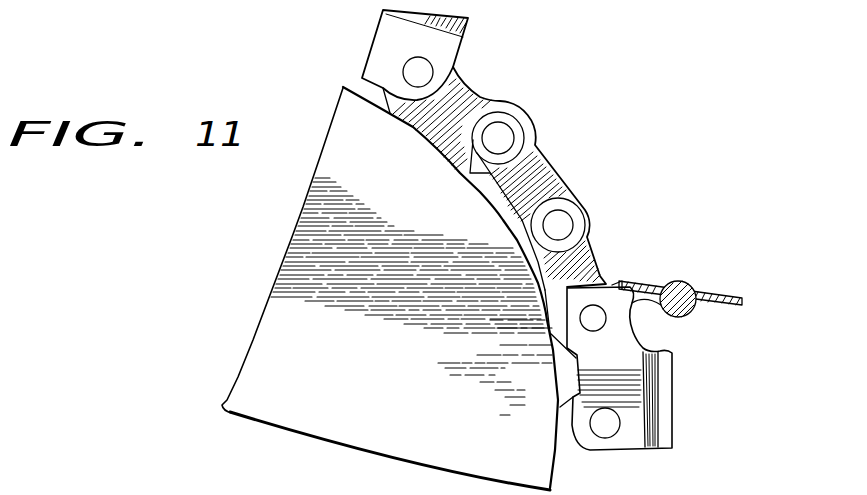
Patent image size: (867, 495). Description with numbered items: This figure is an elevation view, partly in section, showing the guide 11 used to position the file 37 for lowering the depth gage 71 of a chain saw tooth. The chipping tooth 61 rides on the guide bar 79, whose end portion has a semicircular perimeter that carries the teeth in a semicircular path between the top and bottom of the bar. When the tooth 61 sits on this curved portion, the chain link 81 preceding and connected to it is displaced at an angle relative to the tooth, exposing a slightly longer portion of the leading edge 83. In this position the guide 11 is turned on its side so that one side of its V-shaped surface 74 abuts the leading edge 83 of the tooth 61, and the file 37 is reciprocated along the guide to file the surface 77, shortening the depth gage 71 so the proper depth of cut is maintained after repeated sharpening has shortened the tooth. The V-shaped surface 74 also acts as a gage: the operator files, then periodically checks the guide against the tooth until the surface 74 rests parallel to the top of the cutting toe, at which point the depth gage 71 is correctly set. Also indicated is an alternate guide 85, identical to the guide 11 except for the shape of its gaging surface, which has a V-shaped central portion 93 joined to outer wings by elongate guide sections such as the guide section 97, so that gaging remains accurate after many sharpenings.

The guide 11 is at (727, 293).
The file 37 is at (693, 312).
The chipping tooth 61 is at (680, 383).
The depth gage 71 is at (650, 292).
The V-shaped surface 74 is at (632, 285).
The surface 77 is at (640, 336).
The guide bar 79 is at (300, 232).
The chain link 81 is at (540, 263).
The leading edge 83 is at (543, 287).
The guide 85 is at (126, 490).
The V-shaped central portion 93 is at (276, 492).
The elongate guide section 97 is at (365, 486).